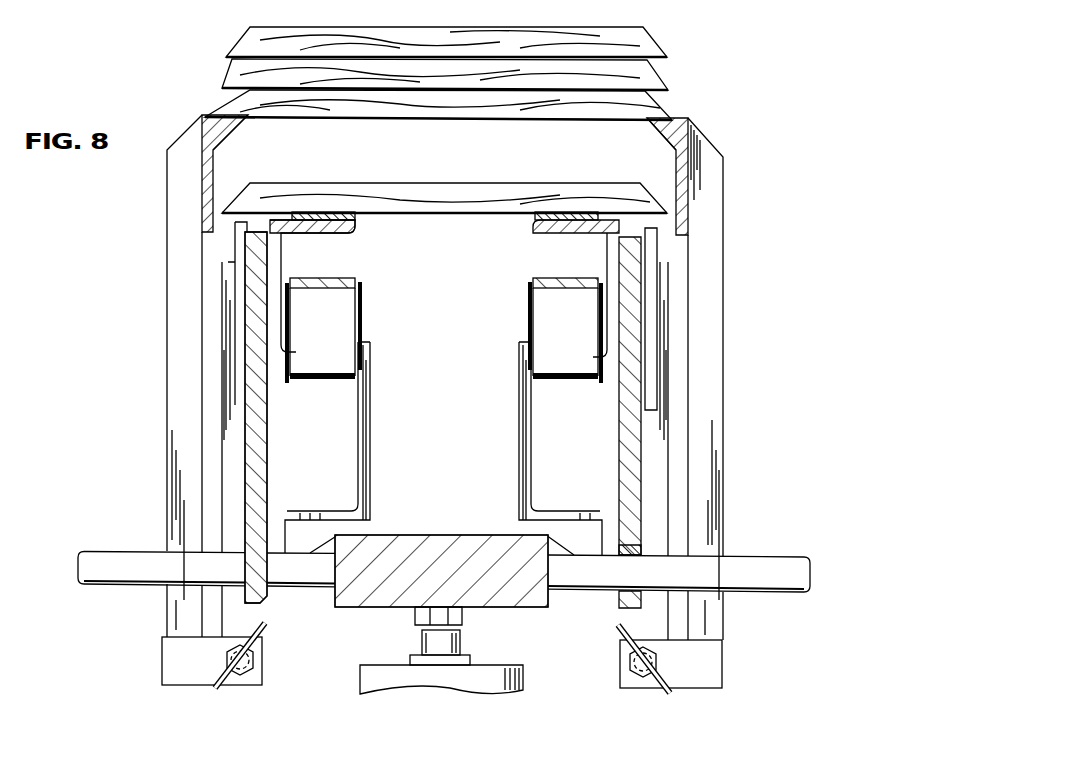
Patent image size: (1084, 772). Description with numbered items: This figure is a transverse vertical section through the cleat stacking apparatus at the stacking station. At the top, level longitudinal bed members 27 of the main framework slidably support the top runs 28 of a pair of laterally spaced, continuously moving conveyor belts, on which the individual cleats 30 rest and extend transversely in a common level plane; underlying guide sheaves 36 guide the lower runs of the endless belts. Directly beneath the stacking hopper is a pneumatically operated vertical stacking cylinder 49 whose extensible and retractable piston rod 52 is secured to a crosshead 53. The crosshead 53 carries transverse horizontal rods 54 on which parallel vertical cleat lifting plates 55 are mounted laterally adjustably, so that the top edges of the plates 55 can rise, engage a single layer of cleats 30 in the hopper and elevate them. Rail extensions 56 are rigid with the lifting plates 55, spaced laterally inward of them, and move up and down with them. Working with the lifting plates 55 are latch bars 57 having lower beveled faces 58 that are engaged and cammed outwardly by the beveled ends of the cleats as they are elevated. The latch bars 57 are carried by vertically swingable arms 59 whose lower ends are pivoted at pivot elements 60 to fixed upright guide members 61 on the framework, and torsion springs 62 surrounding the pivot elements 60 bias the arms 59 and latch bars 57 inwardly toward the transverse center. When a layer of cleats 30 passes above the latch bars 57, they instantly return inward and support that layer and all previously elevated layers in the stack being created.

The longitudinal bed member 27 is at (335, 234).
The top belt run 28 is at (317, 216).
The cleat 30 is at (232, 63).
The guide sheave 36 is at (355, 323).
The stacking cylinder 49 is at (524, 670).
The piston rod 52 is at (455, 642).
The crosshead 53 is at (349, 600).
The transverse horizontal rod 54 is at (120, 550).
The cleat lifting plate 55 is at (263, 448).
The rail extension 56 is at (371, 455).
The latch bar 57 is at (212, 122).
The beveled face 58 is at (227, 134).
The swingable arm 59 is at (170, 312).
The pivot element 60 is at (253, 653).
The upright guide member 61 is at (222, 467).
The torsion spring 62 is at (223, 668).